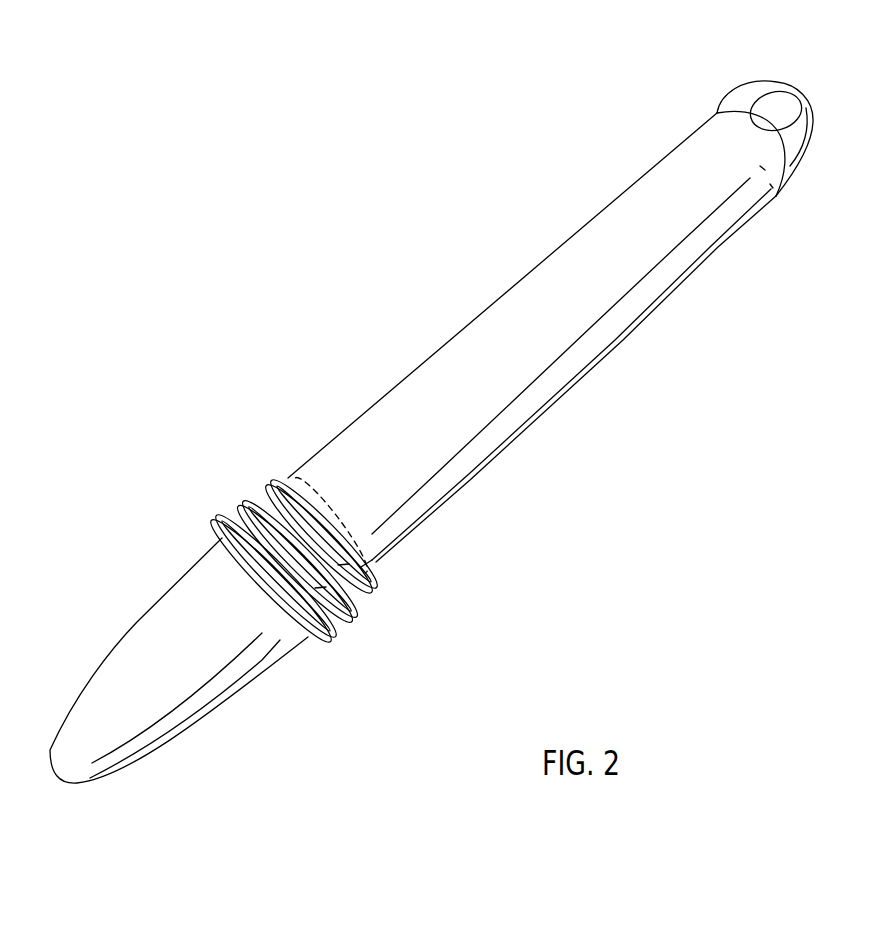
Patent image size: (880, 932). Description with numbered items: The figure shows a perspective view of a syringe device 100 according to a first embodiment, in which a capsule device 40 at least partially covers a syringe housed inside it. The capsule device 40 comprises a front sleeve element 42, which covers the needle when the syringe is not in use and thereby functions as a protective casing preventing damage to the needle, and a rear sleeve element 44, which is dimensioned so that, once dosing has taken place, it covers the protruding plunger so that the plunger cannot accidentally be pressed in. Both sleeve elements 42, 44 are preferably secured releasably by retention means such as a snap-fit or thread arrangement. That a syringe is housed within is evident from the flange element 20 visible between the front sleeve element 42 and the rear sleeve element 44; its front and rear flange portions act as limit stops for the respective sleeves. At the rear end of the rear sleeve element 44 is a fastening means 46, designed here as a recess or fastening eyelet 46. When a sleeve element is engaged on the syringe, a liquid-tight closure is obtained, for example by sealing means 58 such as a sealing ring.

The syringe device 100 is at (530, 598).
The capsule device 40 is at (335, 355).
The front sleeve element 42 is at (136, 622).
The rear sleeve element 44 is at (543, 260).
The fastening means 46 is at (777, 72).
The flange element 20 is at (420, 609).
The sealing means 58 is at (350, 527).